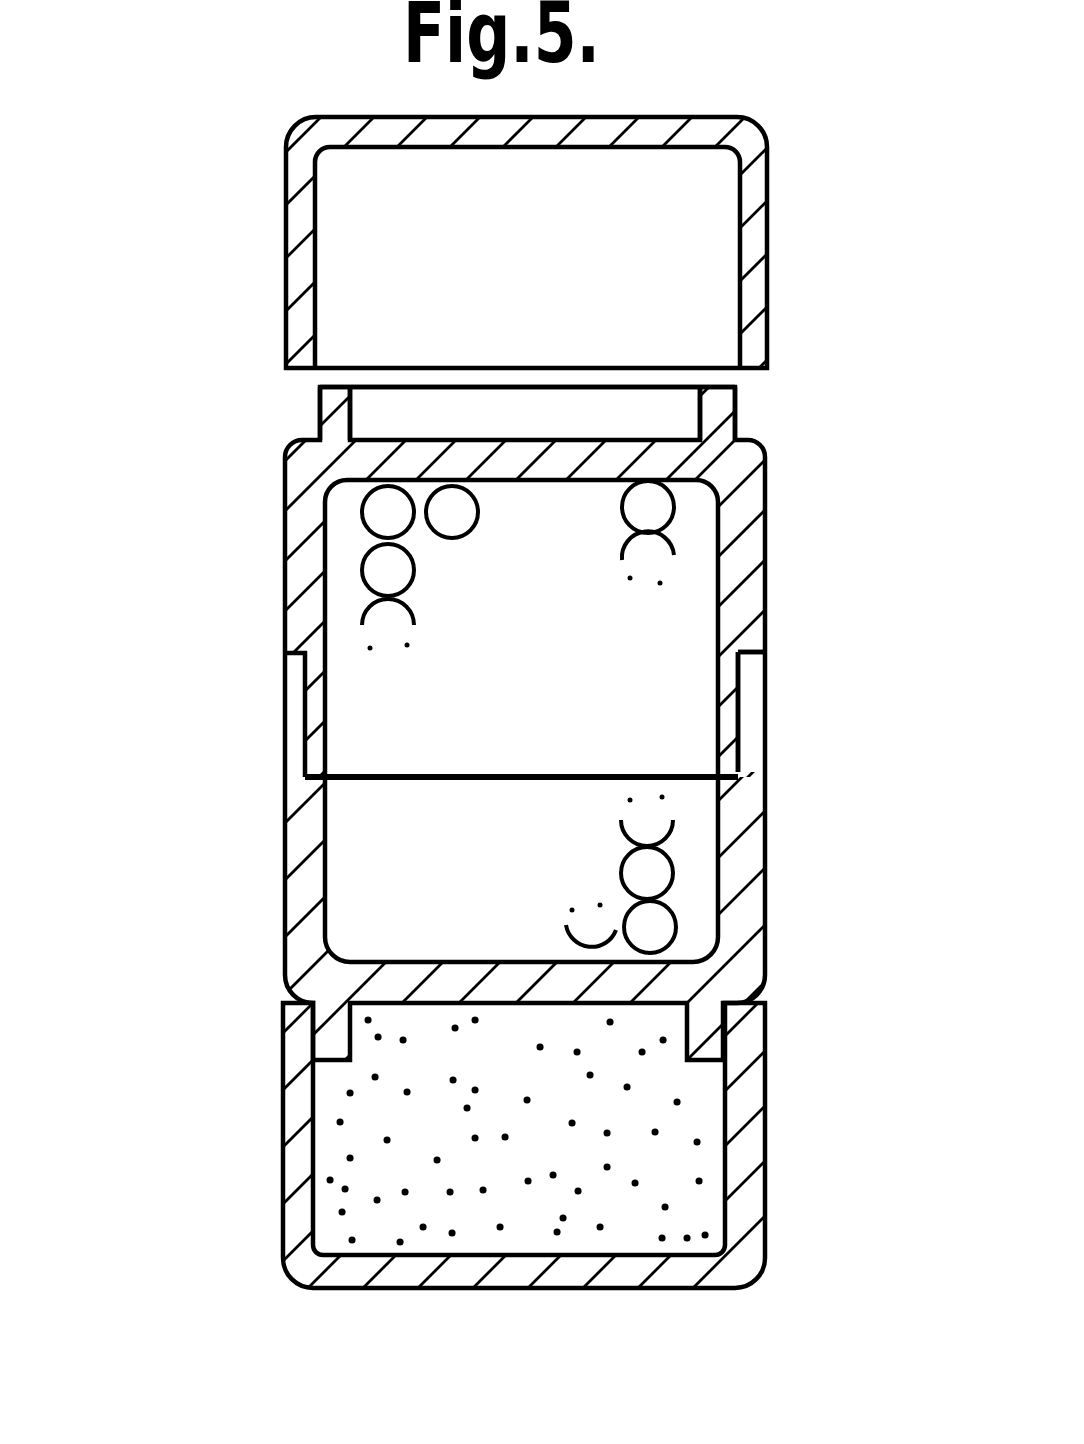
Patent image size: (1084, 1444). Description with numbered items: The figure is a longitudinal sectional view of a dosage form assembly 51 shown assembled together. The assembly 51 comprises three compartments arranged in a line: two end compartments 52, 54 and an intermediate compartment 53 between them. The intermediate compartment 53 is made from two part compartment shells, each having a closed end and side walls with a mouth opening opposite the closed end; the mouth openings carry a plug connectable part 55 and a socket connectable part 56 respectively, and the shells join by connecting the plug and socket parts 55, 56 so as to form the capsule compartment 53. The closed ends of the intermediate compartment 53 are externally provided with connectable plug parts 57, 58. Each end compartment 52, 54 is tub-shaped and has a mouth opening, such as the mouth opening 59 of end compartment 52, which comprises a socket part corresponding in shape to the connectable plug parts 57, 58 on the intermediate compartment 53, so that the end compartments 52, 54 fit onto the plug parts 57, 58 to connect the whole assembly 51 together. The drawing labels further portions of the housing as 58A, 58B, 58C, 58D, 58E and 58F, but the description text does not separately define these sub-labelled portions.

The dosage form assembly 51 is at (208, 658).
The end compartment 52 is at (342, 177).
The intermediate compartment 53 is at (363, 810).
The end compartment 54 is at (470, 1212).
The plug connectable part 55 is at (745, 715).
The socket connectable part 56 is at (763, 735).
The connectable plug part 57 is at (320, 407).
The connectable plug part 58 is at (303, 1035).
The upper right side wall 58A is at (763, 498).
The lower right side wall 58B is at (763, 882).
The top wall 58C is at (612, 440).
The bottom wall 58D is at (630, 1003).
The upper left side wall 58E is at (285, 538).
The lower left side wall 58F is at (285, 900).
The mouth opening 59 is at (398, 357).